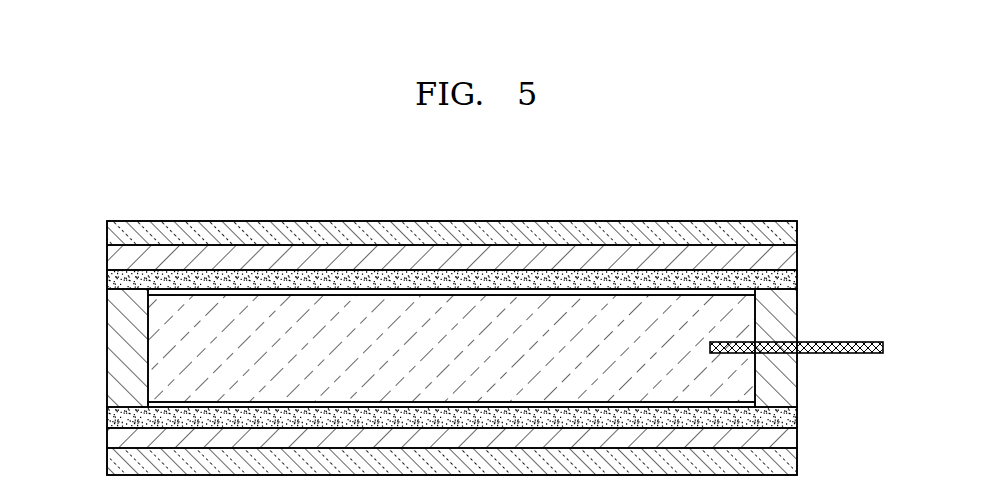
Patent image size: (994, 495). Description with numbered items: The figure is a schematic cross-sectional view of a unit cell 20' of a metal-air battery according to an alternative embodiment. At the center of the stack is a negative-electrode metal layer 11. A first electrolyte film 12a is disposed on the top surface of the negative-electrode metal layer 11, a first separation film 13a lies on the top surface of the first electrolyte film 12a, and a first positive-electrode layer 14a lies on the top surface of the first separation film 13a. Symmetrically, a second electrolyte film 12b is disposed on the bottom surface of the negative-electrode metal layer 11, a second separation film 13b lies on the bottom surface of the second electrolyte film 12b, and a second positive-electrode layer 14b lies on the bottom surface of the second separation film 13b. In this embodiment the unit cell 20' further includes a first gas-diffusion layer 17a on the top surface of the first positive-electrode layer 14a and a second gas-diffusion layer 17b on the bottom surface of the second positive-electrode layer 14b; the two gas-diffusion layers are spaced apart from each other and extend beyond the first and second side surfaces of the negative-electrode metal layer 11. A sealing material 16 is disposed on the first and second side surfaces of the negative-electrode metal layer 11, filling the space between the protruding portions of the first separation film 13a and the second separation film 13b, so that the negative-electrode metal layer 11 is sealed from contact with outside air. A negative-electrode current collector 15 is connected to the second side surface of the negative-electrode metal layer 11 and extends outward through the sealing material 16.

The unit cell 20' is at (452, 300).
The first gas-diffusion layer 17a is at (797, 228).
The first positive-electrode layer 14a is at (790, 258).
The first separation film 13a is at (795, 274).
The first electrolyte film 12a is at (797, 292).
The negative-electrode metal layer 11 is at (752, 323).
The negative-electrode current collector 15 is at (853, 342).
The sealing material 16 is at (108, 344).
The second electrolyte film 12b is at (787, 402).
The second separation film 13b is at (795, 423).
The second positive-electrode layer 14b is at (790, 442).
The second gas-diffusion layer 17b is at (797, 467).